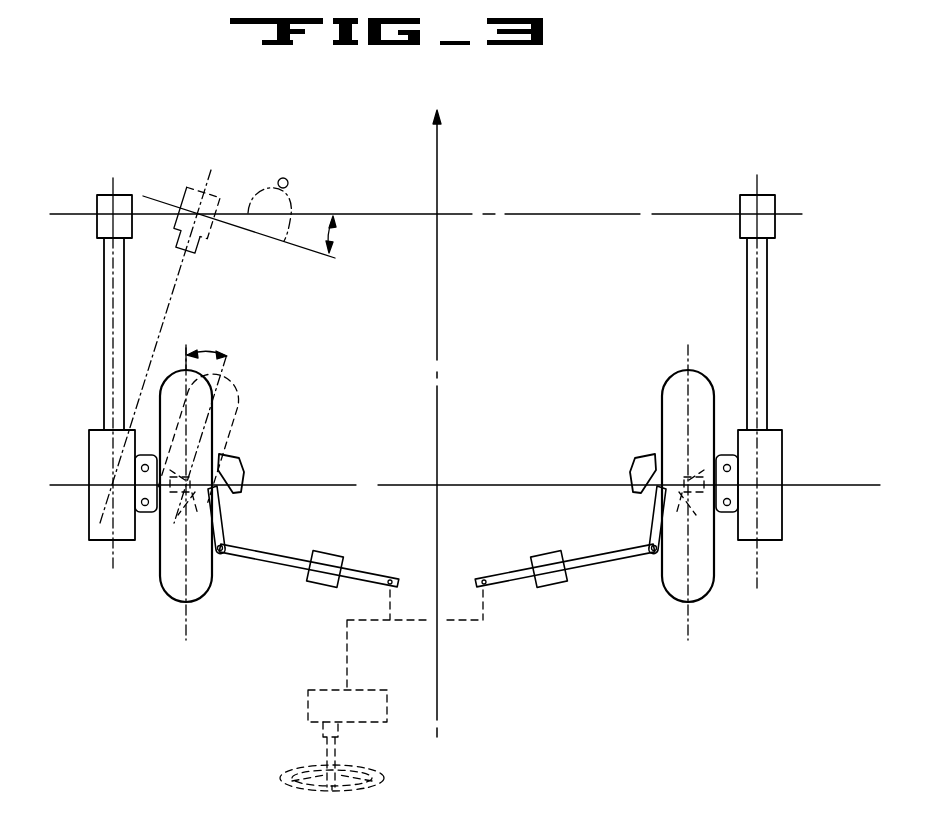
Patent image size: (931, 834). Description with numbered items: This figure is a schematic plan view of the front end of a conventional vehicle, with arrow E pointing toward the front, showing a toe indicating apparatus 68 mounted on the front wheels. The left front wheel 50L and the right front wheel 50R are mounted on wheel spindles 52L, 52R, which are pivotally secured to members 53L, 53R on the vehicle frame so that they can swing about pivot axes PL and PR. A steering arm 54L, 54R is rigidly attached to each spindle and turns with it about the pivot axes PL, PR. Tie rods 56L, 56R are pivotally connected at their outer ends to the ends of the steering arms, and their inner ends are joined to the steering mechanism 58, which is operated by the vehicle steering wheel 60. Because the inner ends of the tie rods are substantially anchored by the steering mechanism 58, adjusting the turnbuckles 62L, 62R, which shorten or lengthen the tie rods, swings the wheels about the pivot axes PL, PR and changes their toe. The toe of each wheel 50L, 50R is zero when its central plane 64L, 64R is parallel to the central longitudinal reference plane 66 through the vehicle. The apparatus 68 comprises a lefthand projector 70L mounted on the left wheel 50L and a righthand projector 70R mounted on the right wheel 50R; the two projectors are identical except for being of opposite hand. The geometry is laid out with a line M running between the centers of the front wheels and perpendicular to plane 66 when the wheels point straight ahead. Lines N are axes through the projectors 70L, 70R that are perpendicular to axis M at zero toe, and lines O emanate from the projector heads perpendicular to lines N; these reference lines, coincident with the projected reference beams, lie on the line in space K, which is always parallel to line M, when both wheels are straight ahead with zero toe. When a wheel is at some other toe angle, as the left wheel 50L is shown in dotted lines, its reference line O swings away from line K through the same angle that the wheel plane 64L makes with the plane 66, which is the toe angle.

The left front wheel 50L is at (236, 387).
The right front wheel 50R is at (700, 596).
The wheel spindle 52L is at (178, 500).
The wheel spindle 52R is at (693, 493).
The member 53L is at (215, 470).
The member 53R is at (650, 472).
The steering arm 54L is at (218, 528).
The steering arm 54R is at (667, 531).
The tie rod 56L is at (283, 568).
The tie rod 56R is at (593, 562).
The steering mechanism 58 is at (448, 620).
The vehicle steering wheel 60 is at (303, 768).
The turnbuckle 62L is at (327, 580).
The turnbuckle 62R is at (600, 597).
The central plane 64L is at (228, 365).
The central plane 64R is at (692, 618).
The central longitudinal reference plane 66 is at (440, 408).
The toe indicating apparatus 68 is at (462, 190).
The lefthand projector 70L is at (104, 313).
The righthand projector 70R is at (767, 290).
The projector axis N is at (113, 333).
The arrow E is at (437, 139).
The line in space K is at (470, 213).
The reference line O is at (621, 222).
The axis between wheel centers M is at (366, 468).
The axle line L is at (465, 485).
The pivot axis PL is at (197, 497).
The pivot axis PR is at (670, 500).